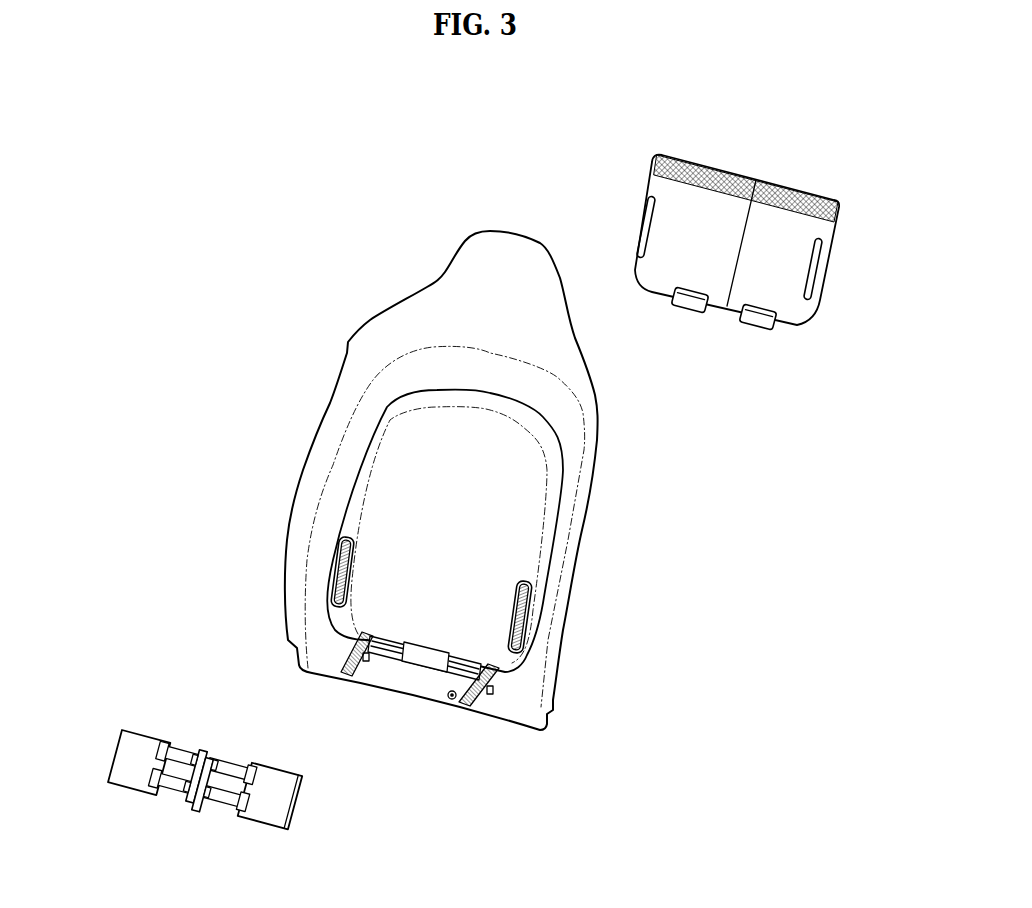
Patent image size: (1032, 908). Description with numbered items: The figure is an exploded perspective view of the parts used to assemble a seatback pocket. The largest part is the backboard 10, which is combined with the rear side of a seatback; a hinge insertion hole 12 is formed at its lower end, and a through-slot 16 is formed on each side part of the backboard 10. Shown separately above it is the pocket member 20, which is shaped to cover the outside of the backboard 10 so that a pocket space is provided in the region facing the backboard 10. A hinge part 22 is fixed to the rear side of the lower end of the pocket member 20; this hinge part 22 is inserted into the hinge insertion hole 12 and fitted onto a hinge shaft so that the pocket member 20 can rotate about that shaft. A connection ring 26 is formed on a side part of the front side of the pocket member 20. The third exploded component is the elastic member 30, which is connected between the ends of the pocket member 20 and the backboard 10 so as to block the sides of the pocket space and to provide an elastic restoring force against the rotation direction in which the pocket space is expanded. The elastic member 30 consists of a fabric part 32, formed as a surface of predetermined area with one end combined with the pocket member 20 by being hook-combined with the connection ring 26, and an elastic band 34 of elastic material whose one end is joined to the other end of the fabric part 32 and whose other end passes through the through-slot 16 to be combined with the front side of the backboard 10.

The backboard 10 is at (407, 475).
The hinge insertion hole 12 is at (490, 669).
The through-slot 16 is at (333, 565).
The pocket member 20 is at (733, 246).
The hinge part 22 is at (687, 299).
The connection ring 26 is at (643, 213).
The elastic member 30 is at (208, 792).
The fabric part 32 is at (205, 779).
The elastic band 34 is at (130, 756).